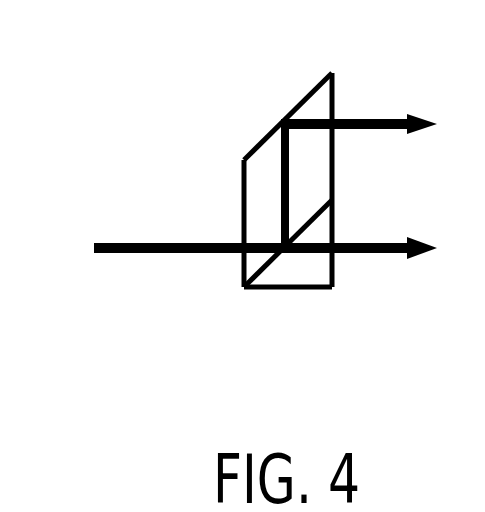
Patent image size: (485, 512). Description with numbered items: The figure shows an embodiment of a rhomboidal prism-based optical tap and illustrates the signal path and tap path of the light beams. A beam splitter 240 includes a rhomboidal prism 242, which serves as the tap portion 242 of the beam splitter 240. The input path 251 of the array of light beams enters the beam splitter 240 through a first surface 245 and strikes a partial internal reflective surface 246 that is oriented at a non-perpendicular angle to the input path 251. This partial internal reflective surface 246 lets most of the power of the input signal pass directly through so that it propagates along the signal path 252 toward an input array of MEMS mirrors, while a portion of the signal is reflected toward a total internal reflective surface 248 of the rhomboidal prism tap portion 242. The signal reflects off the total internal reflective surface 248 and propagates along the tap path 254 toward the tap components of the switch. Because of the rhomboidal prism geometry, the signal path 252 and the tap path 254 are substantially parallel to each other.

The beam splitter 240 is at (236, 186).
The rhomboidal prism 242 is at (243, 233).
The first surface 245 is at (242, 266).
The partial internal reflective surface 246 is at (305, 224).
The total internal reflective surface 248 is at (302, 100).
The input path 251 is at (148, 253).
The signal path 252 is at (393, 254).
The tap path 254 is at (368, 120).